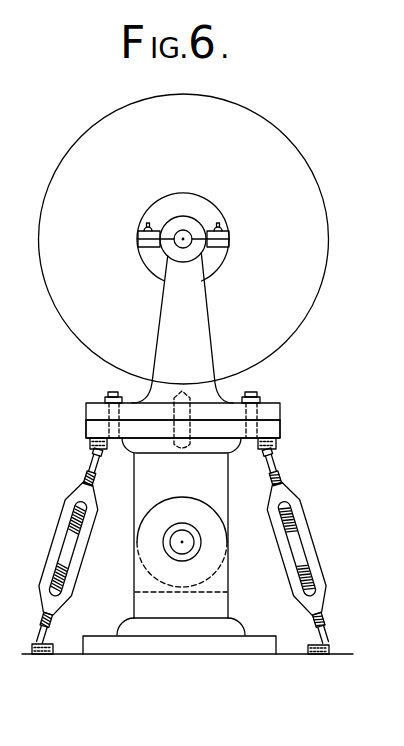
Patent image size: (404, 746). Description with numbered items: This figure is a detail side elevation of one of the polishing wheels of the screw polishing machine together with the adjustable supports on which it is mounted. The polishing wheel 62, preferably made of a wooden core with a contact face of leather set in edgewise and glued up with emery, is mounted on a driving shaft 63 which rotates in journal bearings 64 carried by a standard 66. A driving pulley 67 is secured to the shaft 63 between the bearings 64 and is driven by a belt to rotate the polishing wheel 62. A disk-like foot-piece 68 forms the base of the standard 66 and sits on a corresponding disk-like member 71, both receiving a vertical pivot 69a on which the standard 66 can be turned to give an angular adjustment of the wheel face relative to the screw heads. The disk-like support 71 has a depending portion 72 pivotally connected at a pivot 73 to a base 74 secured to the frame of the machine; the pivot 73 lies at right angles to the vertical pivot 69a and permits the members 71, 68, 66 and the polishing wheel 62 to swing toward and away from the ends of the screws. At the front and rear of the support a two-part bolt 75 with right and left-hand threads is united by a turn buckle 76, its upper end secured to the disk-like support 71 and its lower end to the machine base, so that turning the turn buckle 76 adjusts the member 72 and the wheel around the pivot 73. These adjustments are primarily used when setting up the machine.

The polishing wheel 62 is at (184, 239).
The driving shaft 63 is at (187, 232).
The journal bearings 64 is at (229, 234).
The standard 66 is at (182, 328).
The driving pulley 67 is at (163, 204).
The foot-piece 68 is at (279, 414).
The vertical pivot 69a is at (186, 413).
The disk-like member 71 is at (280, 430).
The depending portion 72 is at (181, 536).
The pivot 73 is at (184, 540).
The base 74 is at (225, 644).
The two-part bolt 75 is at (96, 463).
The turn buckle 76 is at (82, 549).